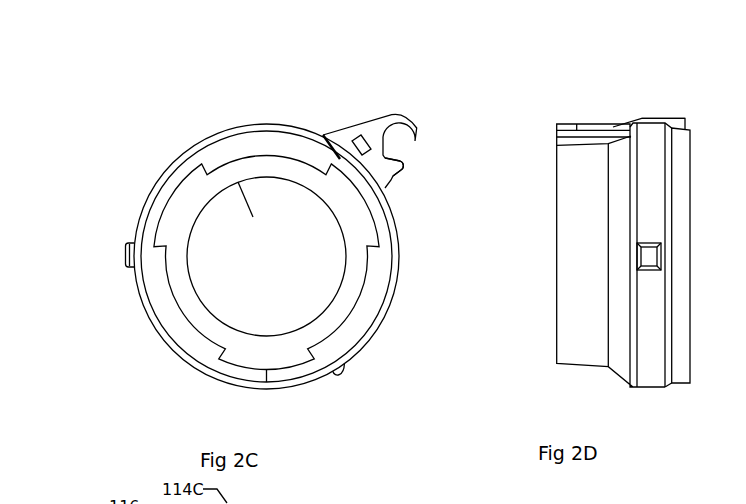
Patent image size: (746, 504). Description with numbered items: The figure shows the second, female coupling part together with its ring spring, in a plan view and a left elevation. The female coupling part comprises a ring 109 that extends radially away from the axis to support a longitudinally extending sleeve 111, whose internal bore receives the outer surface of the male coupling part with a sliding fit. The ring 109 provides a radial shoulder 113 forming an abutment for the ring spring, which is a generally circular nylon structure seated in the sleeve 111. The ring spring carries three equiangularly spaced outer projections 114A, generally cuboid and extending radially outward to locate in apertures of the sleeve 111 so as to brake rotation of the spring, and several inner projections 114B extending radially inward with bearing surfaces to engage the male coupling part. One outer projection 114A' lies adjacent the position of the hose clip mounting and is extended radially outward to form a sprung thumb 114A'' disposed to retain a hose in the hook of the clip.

In FIG. 2C, the radial shoulder 113 is at (253, 217).
In FIG. 2C, the outer projections 114A is at (82, 213).
In FIG. 2D, the outer projections 114A is at (604, 176).
In FIG. 2C, the projection 114A' is at (430, 194).
In FIG. 2C, the sprung thumb 114A'' is at (388, 389).
In FIG. 2D, the inner projections 114B is at (652, 241).
In FIG. 2D, the ring 109 is at (557, 363).
In FIG. 2D, the sleeve 111 is at (665, 387).